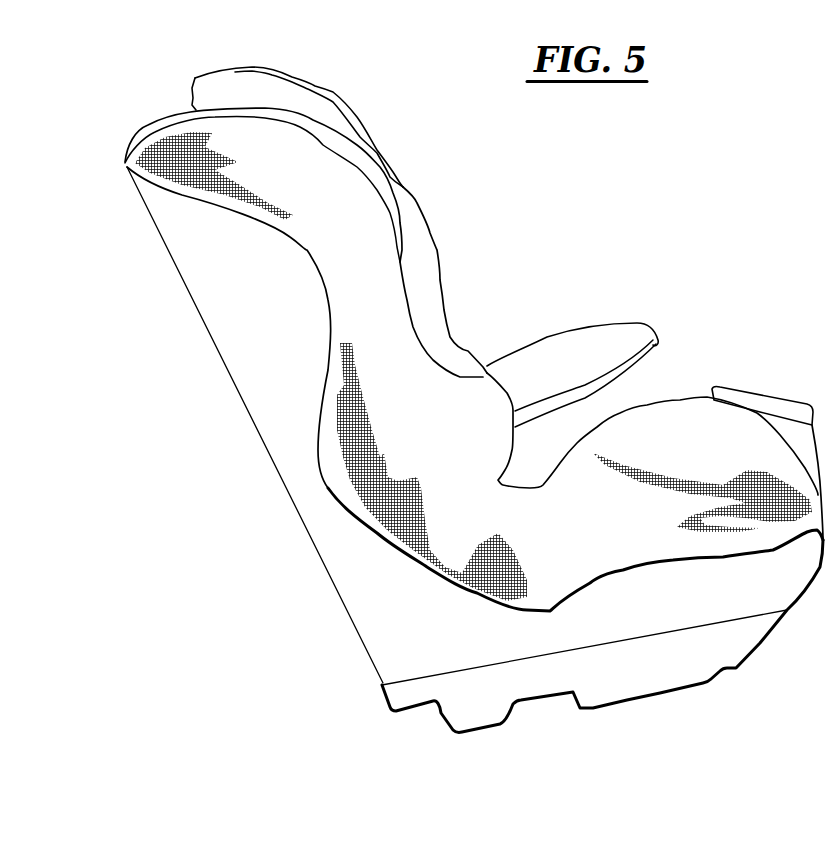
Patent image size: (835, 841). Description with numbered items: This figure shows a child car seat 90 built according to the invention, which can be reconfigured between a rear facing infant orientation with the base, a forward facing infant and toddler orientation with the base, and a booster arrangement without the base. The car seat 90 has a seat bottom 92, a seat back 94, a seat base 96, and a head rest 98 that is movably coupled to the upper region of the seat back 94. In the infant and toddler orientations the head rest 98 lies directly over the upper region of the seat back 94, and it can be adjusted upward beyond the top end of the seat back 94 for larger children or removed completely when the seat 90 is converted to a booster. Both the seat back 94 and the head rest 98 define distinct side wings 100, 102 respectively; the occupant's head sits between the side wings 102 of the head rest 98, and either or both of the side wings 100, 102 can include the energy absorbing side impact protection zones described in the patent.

The child car seat 90 is at (606, 271).
The seat bottom 92 is at (732, 432).
The seat back 94 is at (393, 397).
The seat base 96 is at (417, 692).
The head rest 98 is at (312, 73).
The side wings 100 is at (348, 210).
The side wings 102 is at (313, 105).